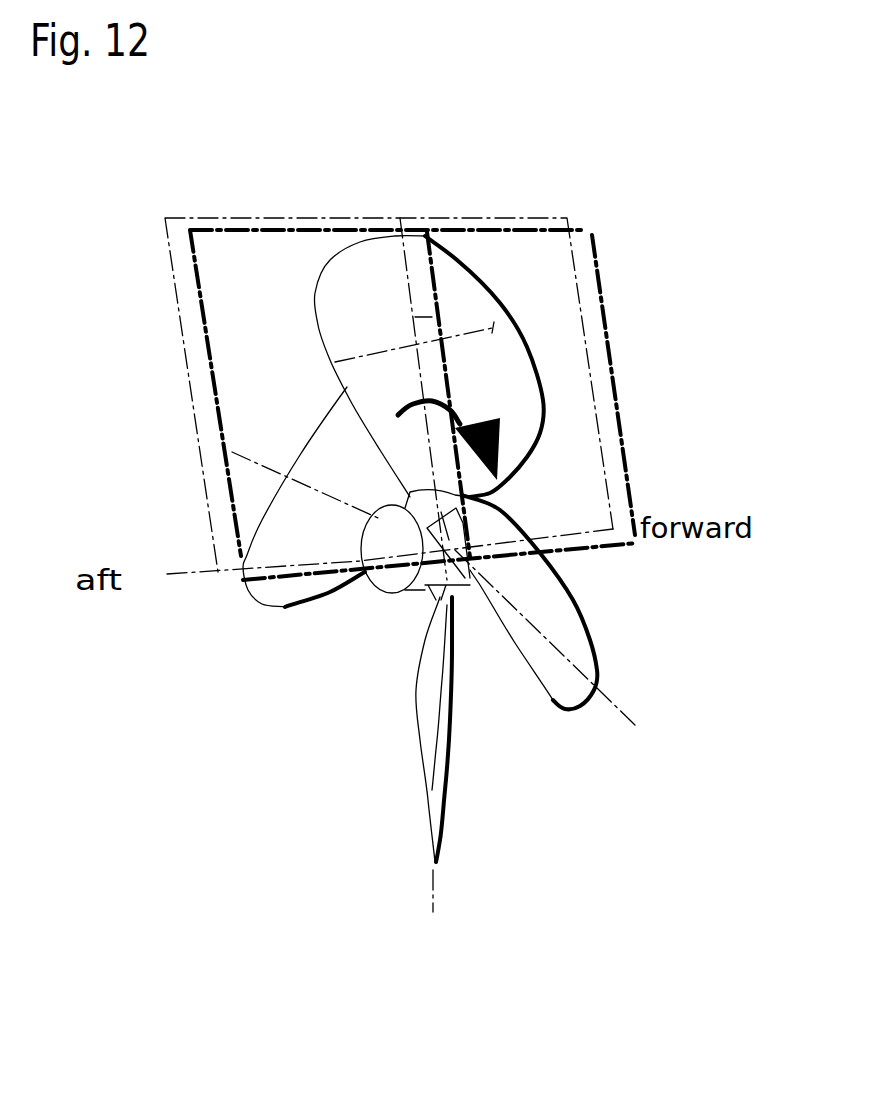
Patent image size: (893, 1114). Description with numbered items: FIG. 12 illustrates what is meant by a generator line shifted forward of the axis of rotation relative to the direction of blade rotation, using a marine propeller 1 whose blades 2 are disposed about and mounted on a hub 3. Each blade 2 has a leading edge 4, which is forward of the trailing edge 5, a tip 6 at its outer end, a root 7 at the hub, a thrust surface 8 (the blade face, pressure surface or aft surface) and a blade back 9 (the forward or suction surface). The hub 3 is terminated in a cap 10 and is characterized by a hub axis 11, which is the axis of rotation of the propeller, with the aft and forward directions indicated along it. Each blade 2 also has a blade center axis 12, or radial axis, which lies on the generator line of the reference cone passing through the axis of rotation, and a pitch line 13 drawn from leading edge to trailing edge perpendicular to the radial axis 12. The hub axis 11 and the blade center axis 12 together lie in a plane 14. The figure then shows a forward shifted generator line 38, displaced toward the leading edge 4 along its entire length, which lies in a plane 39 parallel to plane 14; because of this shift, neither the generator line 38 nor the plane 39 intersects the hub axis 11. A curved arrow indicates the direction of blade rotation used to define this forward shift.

The propeller 1 is at (212, 686).
The blades 2 is at (497, 262).
The hub 3 is at (462, 598).
The leading edge 4 is at (544, 380).
The trailing edge 5 is at (315, 298).
The tip 6 is at (412, 237).
The root 7 is at (426, 476).
The thrust surface 8 is at (296, 508).
The blade back 9 is at (445, 800).
The cap 10 is at (408, 588).
The hub axis 11 is at (372, 561).
The blade center axis 12 is at (409, 250).
The pitch line 13 is at (492, 333).
The plane 14 is at (187, 362).
The forward shifted generator line 38 is at (440, 275).
The plane 39 is at (208, 377).